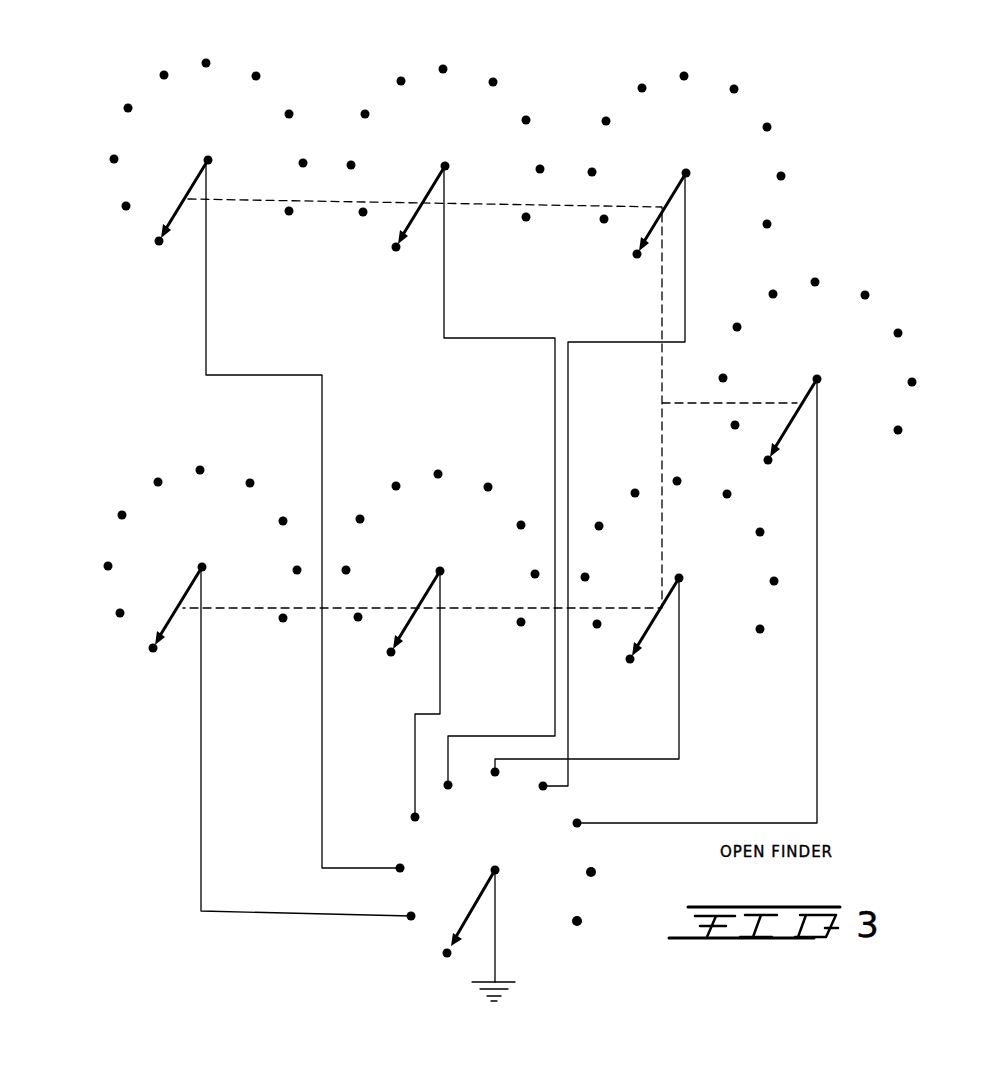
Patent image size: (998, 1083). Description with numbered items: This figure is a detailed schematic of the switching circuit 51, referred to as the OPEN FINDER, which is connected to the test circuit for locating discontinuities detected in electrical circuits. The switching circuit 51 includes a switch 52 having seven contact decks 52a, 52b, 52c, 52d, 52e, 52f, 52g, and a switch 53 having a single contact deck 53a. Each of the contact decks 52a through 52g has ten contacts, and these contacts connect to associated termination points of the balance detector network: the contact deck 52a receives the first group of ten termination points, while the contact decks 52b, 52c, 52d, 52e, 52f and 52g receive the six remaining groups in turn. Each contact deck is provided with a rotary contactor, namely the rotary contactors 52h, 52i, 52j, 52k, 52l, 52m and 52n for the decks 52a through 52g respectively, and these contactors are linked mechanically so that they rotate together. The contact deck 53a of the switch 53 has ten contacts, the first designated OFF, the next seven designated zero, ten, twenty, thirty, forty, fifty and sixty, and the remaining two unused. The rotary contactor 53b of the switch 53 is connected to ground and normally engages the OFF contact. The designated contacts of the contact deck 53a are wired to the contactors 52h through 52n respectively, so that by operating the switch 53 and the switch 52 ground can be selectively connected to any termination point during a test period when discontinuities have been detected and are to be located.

The switching circuit 51 is at (173, 855).
The switch 52 is at (183, 345).
The contact deck 52a is at (178, 498).
The contact deck 52b is at (187, 90).
The contact deck 52c is at (418, 500).
The contact deck 52d is at (427, 100).
The contact deck 52e is at (628, 533).
The contact deck 52f is at (730, 125).
The contact deck 52g is at (868, 333).
The rotary contactor 52h is at (172, 603).
The rotary contactor 52i is at (178, 213).
The rotary contactor 52j is at (421, 597).
The rotary contactor 52k is at (422, 198).
The rotary contactor 52l is at (665, 620).
The rotary contactor 52m is at (665, 202).
The rotary contactor 52n is at (800, 395).
The switch 53 is at (555, 919).
The contact deck 53a is at (553, 855).
The rotary contactor 53b is at (475, 905).